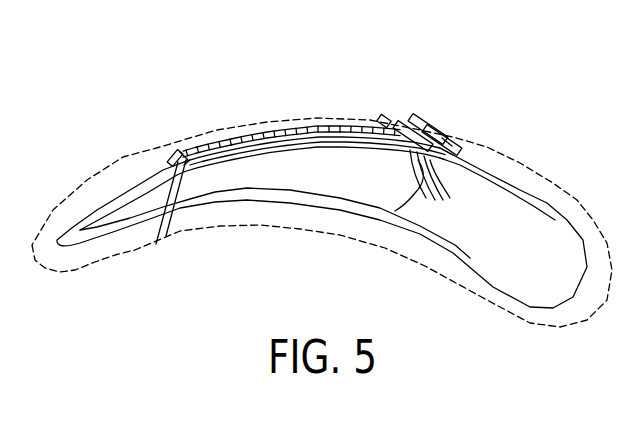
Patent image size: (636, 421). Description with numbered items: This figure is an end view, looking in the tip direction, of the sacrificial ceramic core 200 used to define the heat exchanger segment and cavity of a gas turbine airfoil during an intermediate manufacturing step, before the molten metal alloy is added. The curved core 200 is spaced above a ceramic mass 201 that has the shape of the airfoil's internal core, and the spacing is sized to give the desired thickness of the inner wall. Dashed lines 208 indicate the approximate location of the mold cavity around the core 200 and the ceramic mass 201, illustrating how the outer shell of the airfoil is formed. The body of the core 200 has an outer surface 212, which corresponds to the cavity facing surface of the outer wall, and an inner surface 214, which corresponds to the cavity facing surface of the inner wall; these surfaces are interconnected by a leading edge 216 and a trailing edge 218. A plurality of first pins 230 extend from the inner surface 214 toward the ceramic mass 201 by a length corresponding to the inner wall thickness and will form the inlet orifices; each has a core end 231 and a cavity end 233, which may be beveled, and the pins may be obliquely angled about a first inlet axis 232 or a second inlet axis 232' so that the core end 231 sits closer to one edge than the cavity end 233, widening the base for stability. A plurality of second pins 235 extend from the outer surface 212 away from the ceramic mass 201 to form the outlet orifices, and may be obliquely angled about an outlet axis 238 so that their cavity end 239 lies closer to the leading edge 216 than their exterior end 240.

The sacrificial ceramic core 200 is at (230, 140).
The ceramic mass 201 is at (513, 200).
The dashed lines 208 is at (577, 198).
The outer surface 212 is at (312, 128).
The inner surface 214 is at (290, 150).
The leading edge 216 is at (443, 146).
The trailing edge 218 is at (170, 152).
The first pins 230 is at (302, 211).
The core end 231 is at (184, 165).
The first inlet axis 232 is at (271, 233).
The second inlet axis 232' is at (383, 185).
The cavity end 233 is at (186, 152).
The second pins 235 is at (408, 118).
The outlet axis 238 is at (497, 235).
The cavity end 239 is at (442, 138).
The exterior end 240 is at (418, 116).